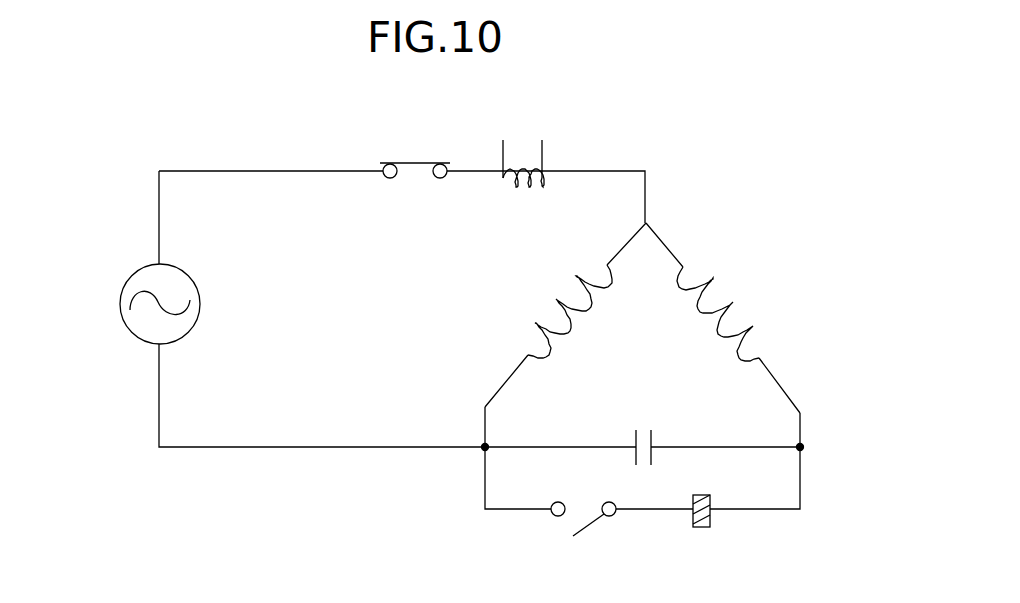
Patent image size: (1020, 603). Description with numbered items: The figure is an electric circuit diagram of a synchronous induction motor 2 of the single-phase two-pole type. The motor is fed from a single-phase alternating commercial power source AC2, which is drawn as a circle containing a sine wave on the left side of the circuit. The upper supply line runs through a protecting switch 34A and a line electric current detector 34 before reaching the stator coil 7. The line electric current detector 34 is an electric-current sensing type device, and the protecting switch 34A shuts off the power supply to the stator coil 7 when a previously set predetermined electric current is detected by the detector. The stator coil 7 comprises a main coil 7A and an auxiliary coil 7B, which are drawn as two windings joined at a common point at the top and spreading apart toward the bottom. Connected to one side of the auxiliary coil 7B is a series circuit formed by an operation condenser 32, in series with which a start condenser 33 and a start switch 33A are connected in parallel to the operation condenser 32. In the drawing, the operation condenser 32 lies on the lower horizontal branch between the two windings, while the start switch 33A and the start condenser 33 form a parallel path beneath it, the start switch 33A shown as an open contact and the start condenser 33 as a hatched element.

The synchronous induction motor 2 is at (690, 136).
The single-phase alternating commercial power source AC2 is at (138, 268).
The protecting switch 34A is at (413, 162).
The line electric current detector 34 is at (544, 152).
The stator coil 7 is at (743, 236).
The main coil 7A is at (553, 294).
The auxiliary coil 7B is at (745, 308).
The operation condenser 32 is at (651, 436).
The start switch 33A is at (589, 526).
The start condenser 33 is at (700, 536).